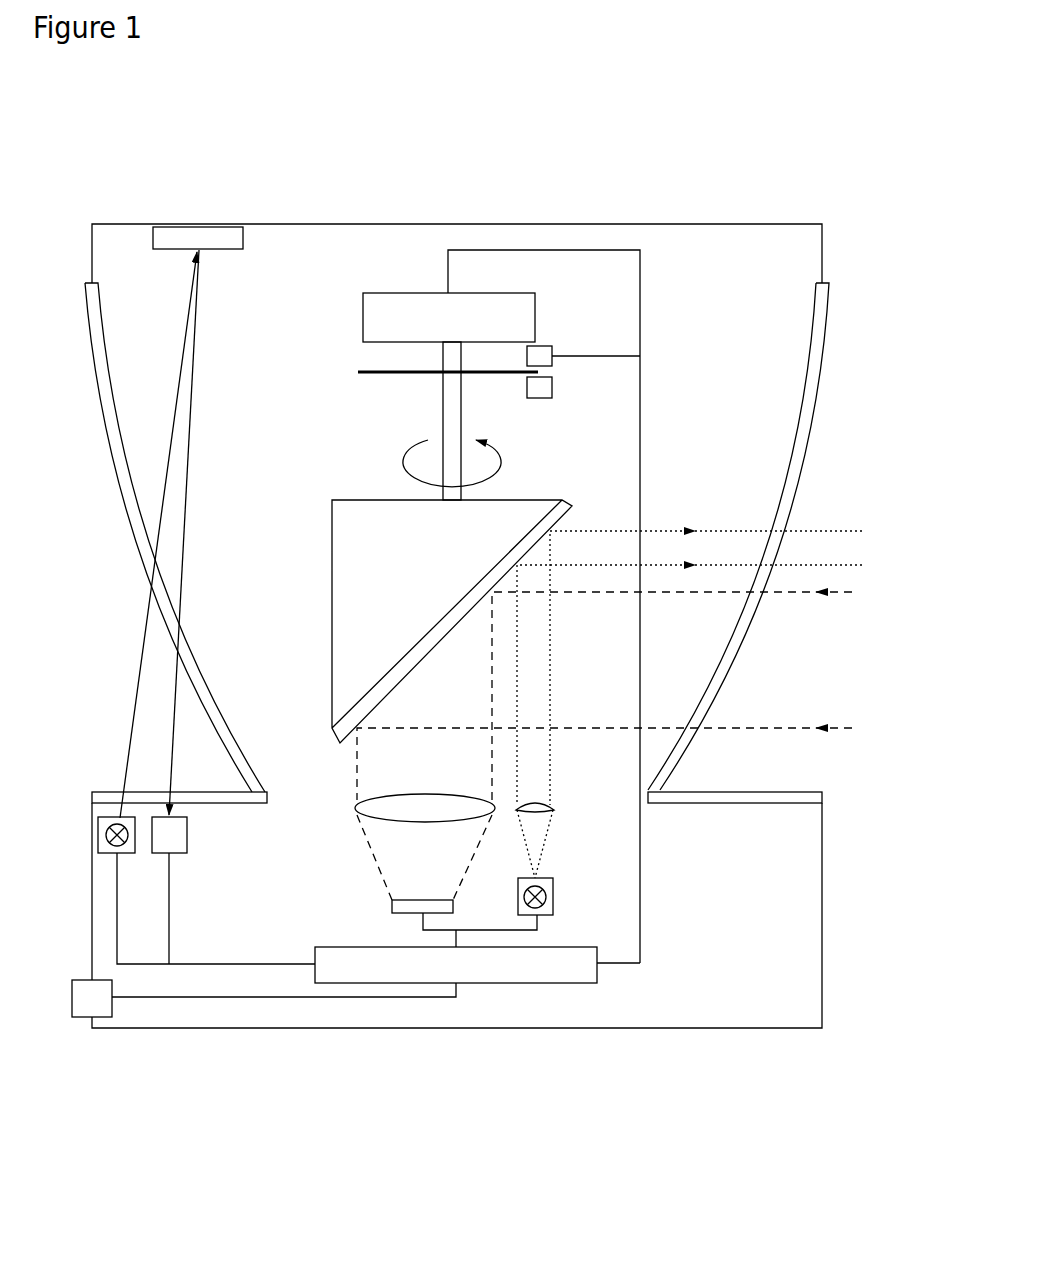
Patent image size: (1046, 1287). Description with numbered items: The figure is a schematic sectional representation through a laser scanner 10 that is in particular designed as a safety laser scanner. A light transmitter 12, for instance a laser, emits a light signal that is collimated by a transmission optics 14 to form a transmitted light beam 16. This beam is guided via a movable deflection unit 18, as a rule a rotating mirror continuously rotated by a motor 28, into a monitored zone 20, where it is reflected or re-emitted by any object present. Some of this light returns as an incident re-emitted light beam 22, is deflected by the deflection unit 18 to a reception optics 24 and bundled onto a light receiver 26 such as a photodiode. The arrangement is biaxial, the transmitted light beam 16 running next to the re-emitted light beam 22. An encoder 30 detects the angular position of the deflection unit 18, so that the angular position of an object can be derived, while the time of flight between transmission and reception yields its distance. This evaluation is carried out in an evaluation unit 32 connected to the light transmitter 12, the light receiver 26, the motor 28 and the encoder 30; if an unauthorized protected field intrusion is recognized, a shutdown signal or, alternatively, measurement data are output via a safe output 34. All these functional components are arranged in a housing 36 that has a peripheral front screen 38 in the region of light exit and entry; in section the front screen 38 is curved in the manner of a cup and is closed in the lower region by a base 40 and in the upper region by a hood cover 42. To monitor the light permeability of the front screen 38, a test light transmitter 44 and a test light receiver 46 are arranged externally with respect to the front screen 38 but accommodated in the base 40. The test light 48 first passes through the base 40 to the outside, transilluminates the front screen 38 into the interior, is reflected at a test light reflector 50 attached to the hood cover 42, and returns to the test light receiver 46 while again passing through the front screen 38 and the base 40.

The laser scanner 10 is at (544, 513).
The light transmitter 12 is at (569, 904).
The transmission optics 14 is at (567, 812).
The transmitted light beam 16 is at (689, 676).
The deflection unit 18 is at (465, 599).
The monitored zone 20 is at (785, 495).
The re-emitted light beam 22 is at (576, 744).
The reception optics 24 is at (395, 803).
The light receiver 26 is at (428, 922).
The motor 28 is at (415, 386).
The encoder 30 is at (583, 353).
The evaluation unit 32 is at (485, 987).
The safe output 34 is at (238, 1019).
The housing 36 is at (458, 958).
The front screen 38 is at (156, 537).
The base 40 is at (150, 769).
The hood cover 42 is at (457, 216).
The test light transmitter 44 is at (160, 890).
The test light receiver 46 is at (199, 890).
The test light 48 is at (159, 534).
The test light reflector 50 is at (198, 197).